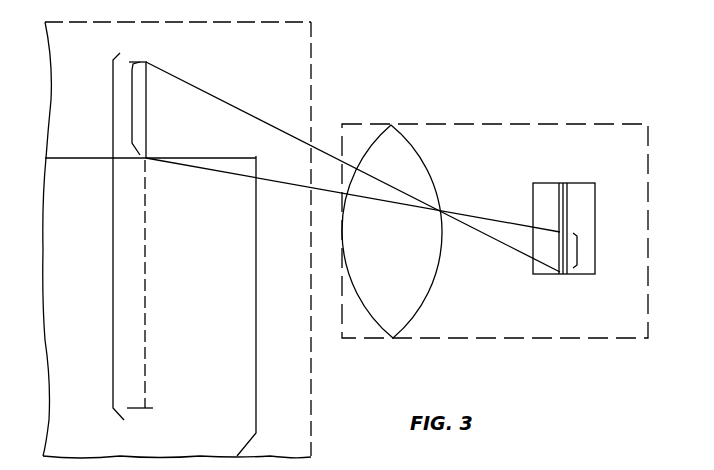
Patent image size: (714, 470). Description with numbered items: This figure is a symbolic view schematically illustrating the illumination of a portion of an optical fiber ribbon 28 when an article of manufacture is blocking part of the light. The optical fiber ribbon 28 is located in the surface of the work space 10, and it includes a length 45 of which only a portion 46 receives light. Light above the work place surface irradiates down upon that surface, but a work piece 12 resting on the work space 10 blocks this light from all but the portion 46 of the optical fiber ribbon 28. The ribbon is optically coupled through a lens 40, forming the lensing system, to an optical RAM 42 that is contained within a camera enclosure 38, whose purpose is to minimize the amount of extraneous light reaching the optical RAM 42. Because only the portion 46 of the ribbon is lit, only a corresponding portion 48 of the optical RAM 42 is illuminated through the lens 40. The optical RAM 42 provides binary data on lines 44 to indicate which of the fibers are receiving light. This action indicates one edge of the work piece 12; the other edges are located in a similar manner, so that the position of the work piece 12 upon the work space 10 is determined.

The work space 10 is at (311, 80).
The work piece 12 is at (258, 324).
The optical fiber ribbon 28 is at (140, 62).
The camera enclosure 38 is at (460, 124).
The lens 40 is at (429, 172).
The optical RAM 42 is at (560, 183).
The lines 44 is at (570, 274).
The length 45 is at (113, 263).
The portion 46 is at (132, 105).
The portion 48 is at (575, 250).